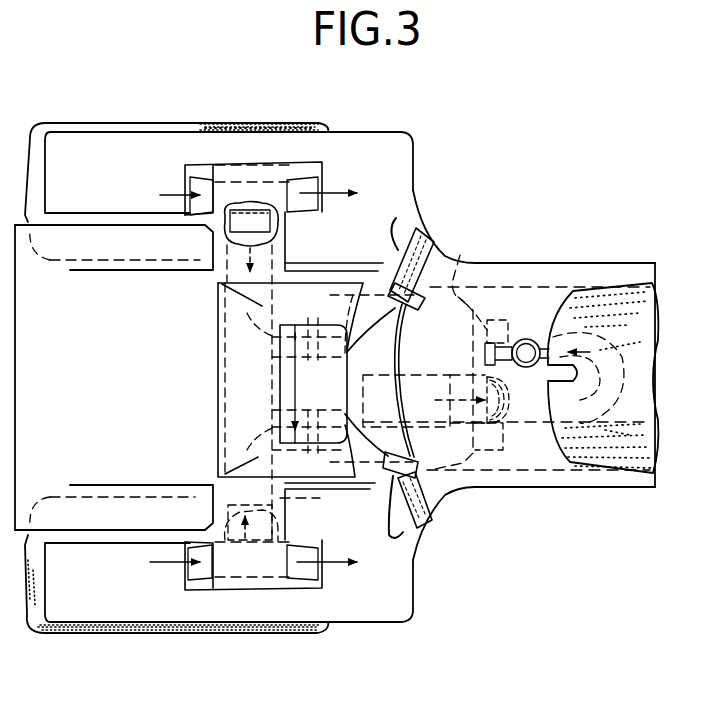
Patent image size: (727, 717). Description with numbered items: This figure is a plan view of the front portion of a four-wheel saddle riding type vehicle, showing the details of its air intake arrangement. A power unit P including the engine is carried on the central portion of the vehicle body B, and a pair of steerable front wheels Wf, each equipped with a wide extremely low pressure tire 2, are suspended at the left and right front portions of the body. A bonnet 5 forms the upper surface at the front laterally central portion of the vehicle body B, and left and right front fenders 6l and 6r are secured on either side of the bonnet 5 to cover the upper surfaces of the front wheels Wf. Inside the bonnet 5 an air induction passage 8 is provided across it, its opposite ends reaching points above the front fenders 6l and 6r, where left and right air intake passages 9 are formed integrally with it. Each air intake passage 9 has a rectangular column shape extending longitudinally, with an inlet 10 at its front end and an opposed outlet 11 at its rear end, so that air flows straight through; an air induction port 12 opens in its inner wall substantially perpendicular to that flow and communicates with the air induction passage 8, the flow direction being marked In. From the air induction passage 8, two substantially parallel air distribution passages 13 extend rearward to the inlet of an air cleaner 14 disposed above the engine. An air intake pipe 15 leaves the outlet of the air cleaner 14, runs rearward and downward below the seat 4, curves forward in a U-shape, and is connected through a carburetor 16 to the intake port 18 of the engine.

The wide extremely low pressure tire 2 is at (295, 125).
The seat 4 is at (618, 297).
The bonnet 5 is at (123, 373).
The right front fender 6r is at (100, 145).
The left front fender 6l is at (90, 614).
The air induction passage 8 is at (226, 363).
The air intake passage 9 is at (247, 188).
The inlet 10 is at (190, 185).
The outlet 11 is at (313, 183).
The air induction port 12 is at (276, 228).
The air distribution passage 13 is at (277, 328).
The air cleaner 14 is at (425, 352).
The air intake pipe 15 is at (531, 422).
The carburetor 16 is at (528, 340).
The intake port 18 is at (487, 342).
The vehicle body B is at (556, 262).
The inlet direction In is at (512, 322).
The power unit P is at (493, 459).
The front wheel Wf is at (170, 119).